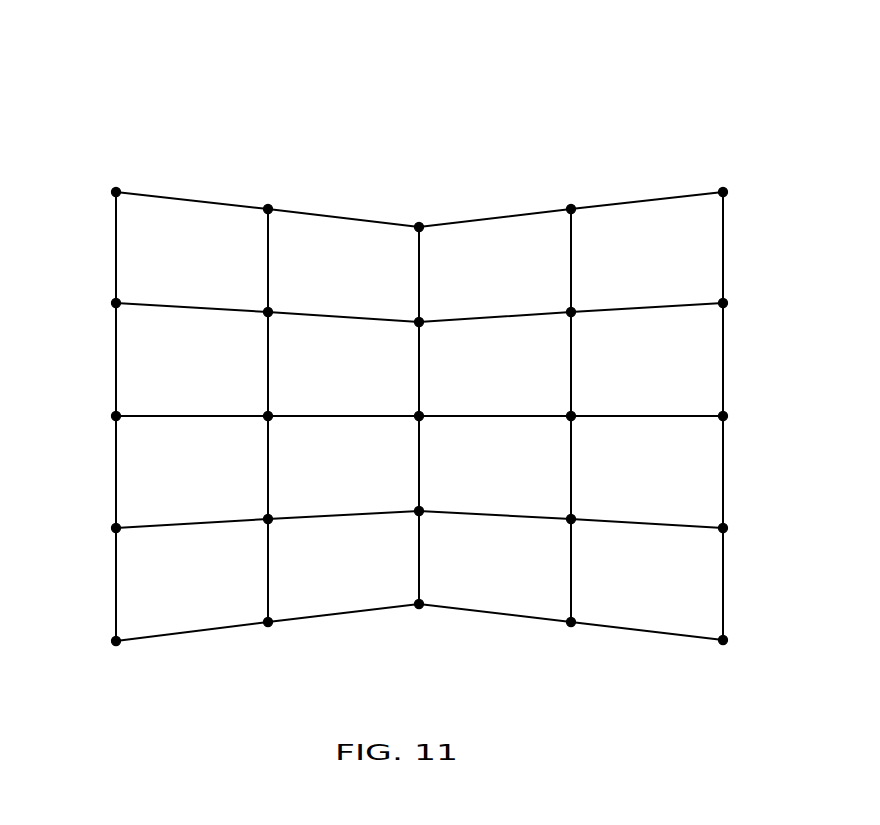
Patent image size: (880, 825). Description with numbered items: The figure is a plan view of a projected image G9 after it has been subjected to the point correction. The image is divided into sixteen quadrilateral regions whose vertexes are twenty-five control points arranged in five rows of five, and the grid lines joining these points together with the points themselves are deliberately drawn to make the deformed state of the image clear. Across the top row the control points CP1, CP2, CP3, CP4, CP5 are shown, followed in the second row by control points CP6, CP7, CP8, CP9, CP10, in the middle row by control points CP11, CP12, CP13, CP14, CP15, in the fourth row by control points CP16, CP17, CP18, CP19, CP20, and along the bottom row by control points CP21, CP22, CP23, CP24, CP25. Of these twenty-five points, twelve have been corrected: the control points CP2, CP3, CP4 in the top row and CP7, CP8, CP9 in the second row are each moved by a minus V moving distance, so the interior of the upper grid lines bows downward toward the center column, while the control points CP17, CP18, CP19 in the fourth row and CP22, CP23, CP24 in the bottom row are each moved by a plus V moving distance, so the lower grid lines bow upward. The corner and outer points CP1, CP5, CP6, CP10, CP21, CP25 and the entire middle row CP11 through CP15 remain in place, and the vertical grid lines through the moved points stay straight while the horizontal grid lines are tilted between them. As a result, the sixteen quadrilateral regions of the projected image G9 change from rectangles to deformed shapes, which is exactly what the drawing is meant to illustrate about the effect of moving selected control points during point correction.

The projected image G9 is at (678, 70).
The control point CP1 is at (116, 192).
The control point CP2 is at (268, 209).
The control point CP3 is at (419, 227).
The control point CP4 is at (571, 209).
The control point CP5 is at (723, 192).
The control point CP6 is at (116, 303).
The control point CP7 is at (268, 312).
The control point CP8 is at (419, 322).
The control point CP9 is at (571, 312).
The control point CP10 is at (723, 303).
The control point CP11 is at (116, 416).
The control point CP12 is at (268, 416).
The control point CP13 is at (419, 416).
The control point CP14 is at (571, 416).
The control point CP15 is at (723, 416).
The control point CP16 is at (116, 528).
The control point CP17 is at (268, 519).
The control point CP18 is at (419, 511).
The control point CP19 is at (571, 519).
The control point CP20 is at (723, 528).
The control point CP21 is at (116, 641).
The control point CP22 is at (268, 622).
The control point CP23 is at (419, 604).
The control point CP24 is at (571, 622).
The control point CP25 is at (723, 640).